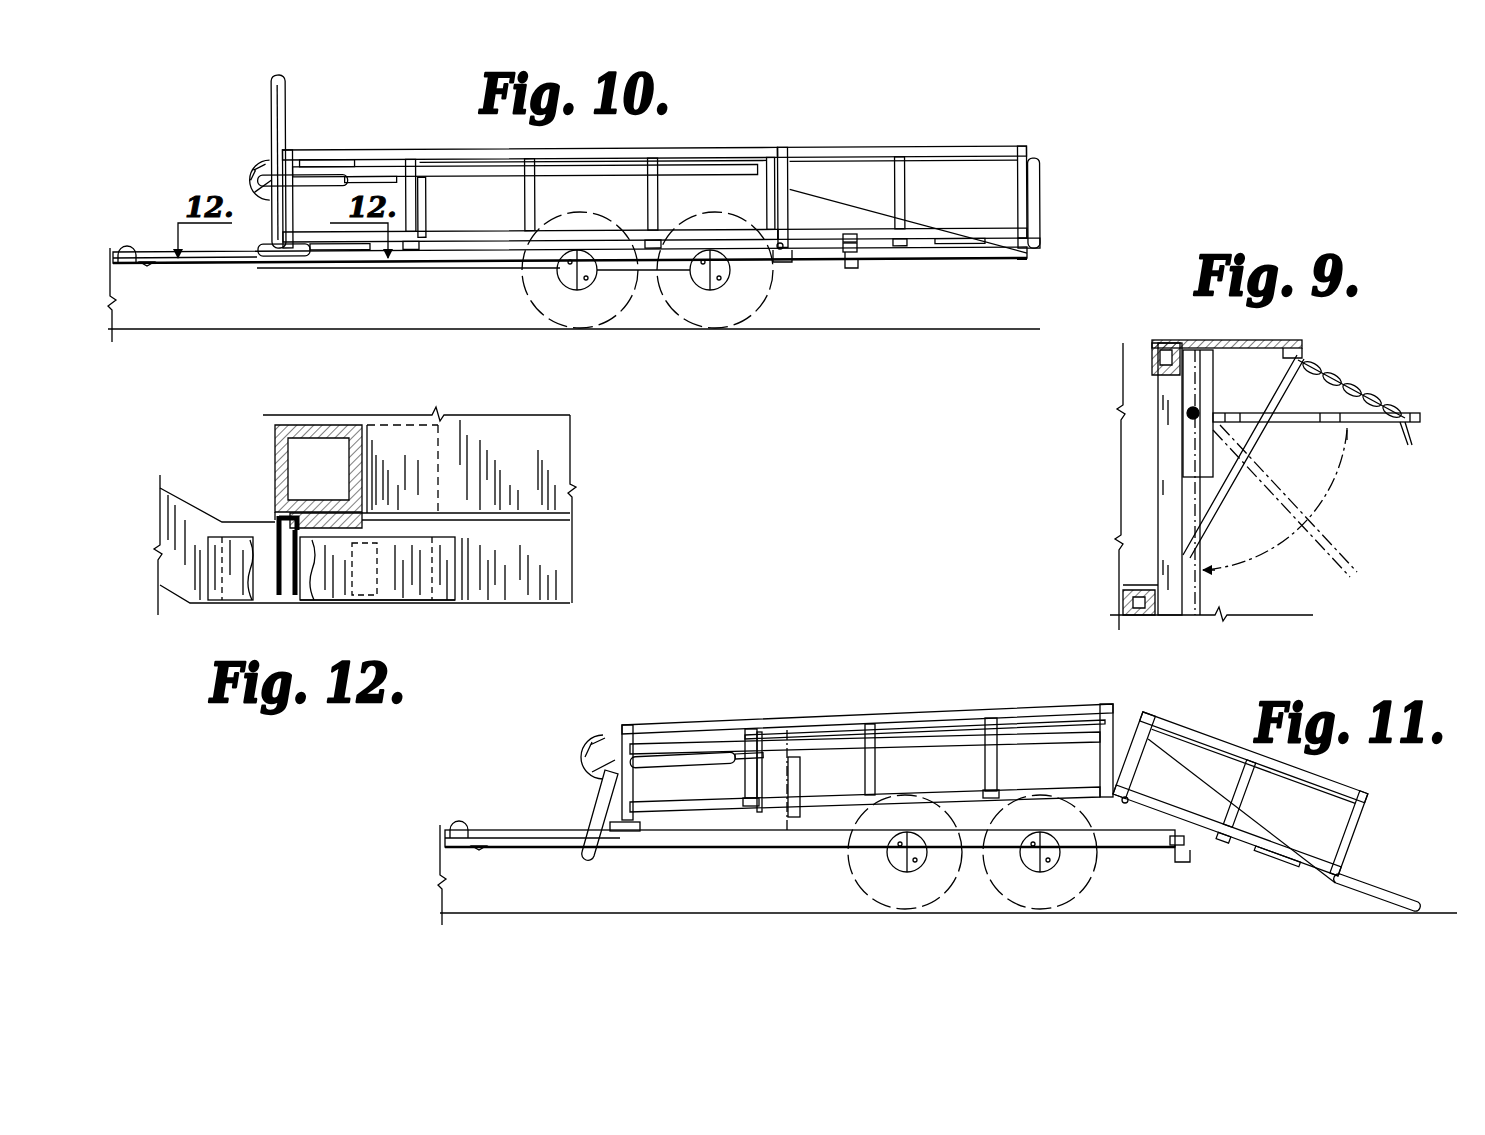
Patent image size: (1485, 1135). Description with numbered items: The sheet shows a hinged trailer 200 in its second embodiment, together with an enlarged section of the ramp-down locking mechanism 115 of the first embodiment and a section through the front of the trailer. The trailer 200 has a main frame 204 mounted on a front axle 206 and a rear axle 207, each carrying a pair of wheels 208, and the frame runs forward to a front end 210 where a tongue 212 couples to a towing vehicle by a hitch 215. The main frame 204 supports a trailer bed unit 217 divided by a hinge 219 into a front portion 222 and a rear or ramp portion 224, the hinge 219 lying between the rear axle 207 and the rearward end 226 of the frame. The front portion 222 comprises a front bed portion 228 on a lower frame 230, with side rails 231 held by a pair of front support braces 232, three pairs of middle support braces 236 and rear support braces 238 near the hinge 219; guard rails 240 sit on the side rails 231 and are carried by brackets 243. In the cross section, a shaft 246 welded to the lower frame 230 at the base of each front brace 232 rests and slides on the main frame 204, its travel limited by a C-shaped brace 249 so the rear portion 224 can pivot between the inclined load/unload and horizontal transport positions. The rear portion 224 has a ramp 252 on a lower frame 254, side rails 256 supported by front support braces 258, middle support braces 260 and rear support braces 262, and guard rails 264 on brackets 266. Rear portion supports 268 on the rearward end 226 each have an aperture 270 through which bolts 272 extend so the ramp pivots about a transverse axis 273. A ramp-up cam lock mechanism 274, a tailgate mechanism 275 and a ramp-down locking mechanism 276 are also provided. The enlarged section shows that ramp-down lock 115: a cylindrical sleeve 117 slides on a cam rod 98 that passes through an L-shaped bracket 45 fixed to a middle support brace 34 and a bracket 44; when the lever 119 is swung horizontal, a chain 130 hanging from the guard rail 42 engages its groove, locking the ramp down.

In FIG. 9, the middle support brace 34 is at (1170, 508).
In FIG. 9, the guard rail 42 is at (1270, 342).
In FIG. 9, the bracket 44 is at (1250, 440).
In FIG. 9, the L-shaped bracket 45 is at (1214, 409).
In FIG. 9, the cam rod 98 is at (1186, 418).
In FIG. 9, the ramp-down locking mechanism 115 is at (1195, 333).
In FIG. 9, the cylindrical sleeve 117 is at (1203, 395).
In FIG. 9, the lever 119 is at (1370, 430).
In FIG. 9, the chain 130 is at (1332, 375).
In FIG. 10, the hinged trailer 200 is at (723, 125).
In FIG. 11, the hinged trailer 200 is at (822, 698).
In FIG. 10, the main frame 204 is at (371, 262).
In FIG. 12, the main frame 204 is at (547, 570).
In FIG. 11, the main frame 204 is at (725, 848).
In FIG. 10, the axle 206 is at (570, 282).
In FIG. 11, the axle 206 is at (905, 876).
In FIG. 10, the rear axle 207 is at (705, 285).
In FIG. 11, the rear axle 207 is at (1040, 872).
In FIG. 10, the wheels 208 is at (647, 281).
In FIG. 11, the wheels 208 is at (972, 865).
In FIG. 10, the front end 210 is at (176, 183).
In FIG. 11, the front end 210 is at (545, 828).
In FIG. 10, the tongue 212 is at (190, 264).
In FIG. 11, the tongue 212 is at (527, 848).
In FIG. 10, the hitch 215 is at (124, 265).
In FIG. 11, the hitch 215 is at (455, 850).
In FIG. 10, the trailer bed unit 217 is at (382, 127).
In FIG. 11, the trailer bed unit 217 is at (867, 755).
In FIG. 10, the hinge 219 is at (776, 250).
In FIG. 11, the hinge 219 is at (1128, 806).
In FIG. 10, the front portion 222 is at (450, 150).
In FIG. 11, the front portion 222 is at (716, 712).
In FIG. 10, the rear portion 224 is at (865, 140).
In FIG. 11, the rear portion 224 is at (1178, 714).
In FIG. 10, the rearward end 226 is at (855, 268).
In FIG. 11, the rearward end 226 is at (1192, 855).
In FIG. 10, the front bed portion 228 is at (470, 240).
In FIG. 11, the front bed portion 228 is at (865, 799).
In FIG. 10, the lower frame 230 is at (325, 250).
In FIG. 12, the lower frame 230 is at (560, 464).
In FIG. 10, the side rails 231 is at (325, 160).
In FIG. 10, the front support braces 232 is at (285, 256).
In FIG. 12, the front support braces 232 is at (275, 468).
In FIG. 10, the middle support braces 236 is at (650, 250).
In FIG. 11, the middle support braces 236 is at (748, 808).
In FIG. 10, the rear support braces 238 is at (768, 206).
In FIG. 10, the guard rails 240 is at (635, 150).
In FIG. 11, the guard rails 240 is at (690, 728).
In FIG. 10, the brackets 243 is at (533, 198).
In FIG. 11, the brackets 243 is at (876, 788).
In FIG. 12, the shaft 246 is at (282, 598).
In FIG. 11, the shaft 246 is at (615, 832).
In FIG. 12, the C-shaped brace 249 is at (385, 598).
In FIG. 11, the C-shaped brace 249 is at (597, 856).
In FIG. 10, the ramp 252 is at (948, 232).
In FIG. 11, the ramp 252 is at (1325, 858).
In FIG. 10, the lower frame 254 is at (960, 247).
In FIG. 11, the lower frame 254 is at (1298, 868).
In FIG. 10, the side rails 256 is at (843, 165).
In FIG. 11, the side rails 256 is at (1203, 744).
In FIG. 10, the front support braces 258 is at (782, 262).
In FIG. 10, the middle support braces 260 is at (903, 249).
In FIG. 11, the middle support braces 260 is at (1214, 850).
In FIG. 10, the rear support braces 262 is at (1030, 252).
In FIG. 10, the guard rails 264 is at (960, 150).
In FIG. 11, the guard rails 264 is at (1352, 790).
In FIG. 10, the brackets 266 is at (788, 183).
In FIG. 11, the brackets 266 is at (1238, 806).
In FIG. 10, the rear portion supports 268 is at (855, 243).
In FIG. 10, the aperture 270 is at (850, 232).
In FIG. 10, the bolts 272 is at (848, 253).
In FIG. 11, the bolts 272 is at (1175, 845).
In FIG. 11, the transverse axis 273 is at (1170, 797).
In FIG. 10, the ramp-up cam lock mechanism 274 is at (268, 148).
In FIG. 11, the ramp-up cam lock mechanism 274 is at (586, 744).
In FIG. 10, the tailgate mechanism 275 is at (1045, 196).
In FIG. 11, the tailgate mechanism 275 is at (1370, 886).
In FIG. 10, the ramp-down locking mechanism 276 is at (440, 193).
In FIG. 11, the ramp-down locking mechanism 276 is at (788, 774).